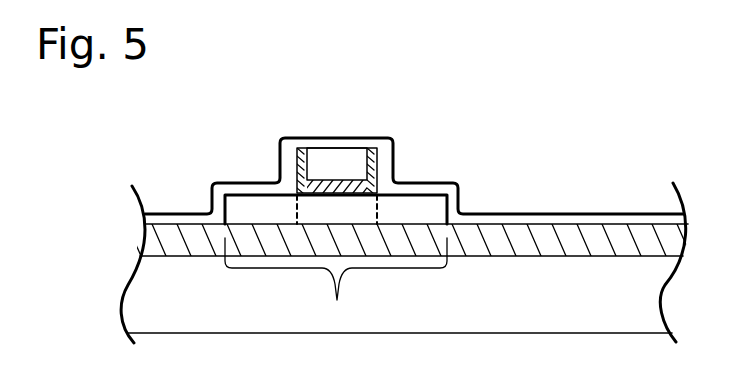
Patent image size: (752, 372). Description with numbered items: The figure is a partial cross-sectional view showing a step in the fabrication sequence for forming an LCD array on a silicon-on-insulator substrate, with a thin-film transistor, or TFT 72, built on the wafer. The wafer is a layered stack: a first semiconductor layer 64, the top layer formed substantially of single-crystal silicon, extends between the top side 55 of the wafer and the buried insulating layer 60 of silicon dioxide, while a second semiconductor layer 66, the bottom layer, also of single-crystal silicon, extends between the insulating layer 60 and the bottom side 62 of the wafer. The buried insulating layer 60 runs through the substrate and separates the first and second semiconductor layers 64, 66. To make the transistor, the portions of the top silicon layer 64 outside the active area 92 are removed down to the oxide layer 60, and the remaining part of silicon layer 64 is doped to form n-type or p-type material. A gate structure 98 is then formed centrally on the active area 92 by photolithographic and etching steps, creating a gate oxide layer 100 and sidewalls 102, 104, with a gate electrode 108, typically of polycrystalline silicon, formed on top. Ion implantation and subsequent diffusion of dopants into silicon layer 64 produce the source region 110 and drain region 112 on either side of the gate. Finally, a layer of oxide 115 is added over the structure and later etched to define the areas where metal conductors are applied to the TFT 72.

The top side 55 is at (268, 194).
The buried insulating layer 60 is at (158, 242).
The bottom side 62 is at (323, 334).
The first semiconductor layer 64 is at (457, 205).
The second semiconductor layer 66 is at (160, 300).
The TFT 72 is at (351, 118).
The active area 92 is at (336, 285).
The gate structure 98 is at (342, 118).
The gate oxide layer 100 is at (332, 187).
The sidewall 102 is at (298, 146).
The sidewall 104 is at (382, 144).
The gate electrode 108 is at (313, 160).
The source region 110 is at (223, 195).
The drain region 112 is at (430, 203).
The layer of oxide 115 is at (594, 218).